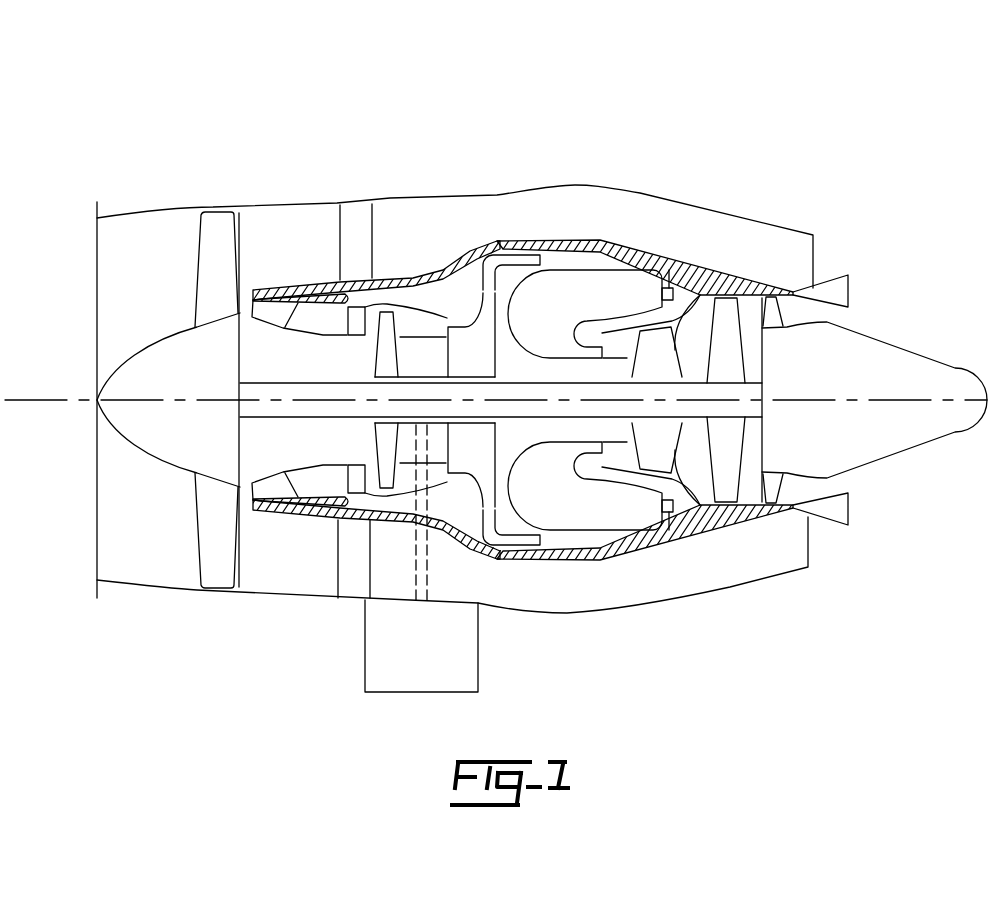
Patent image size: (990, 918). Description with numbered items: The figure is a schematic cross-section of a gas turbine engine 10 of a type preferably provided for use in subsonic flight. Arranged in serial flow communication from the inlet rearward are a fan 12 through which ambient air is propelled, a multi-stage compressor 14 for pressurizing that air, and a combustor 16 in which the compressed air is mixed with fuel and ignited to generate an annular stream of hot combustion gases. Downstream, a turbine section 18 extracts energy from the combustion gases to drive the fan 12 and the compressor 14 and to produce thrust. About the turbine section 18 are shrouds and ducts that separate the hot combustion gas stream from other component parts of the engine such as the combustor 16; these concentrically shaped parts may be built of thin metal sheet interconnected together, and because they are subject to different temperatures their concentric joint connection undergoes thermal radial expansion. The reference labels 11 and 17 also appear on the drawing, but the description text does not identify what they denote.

The gas turbine engine 10 is at (757, 136).
The fan case 11 is at (273, 313).
The fan 12 is at (213, 522).
The multi-stage compressor 14 is at (413, 322).
The combustor 16 is at (577, 295).
The turbine 17 is at (652, 478).
The turbine section 18 is at (692, 442).